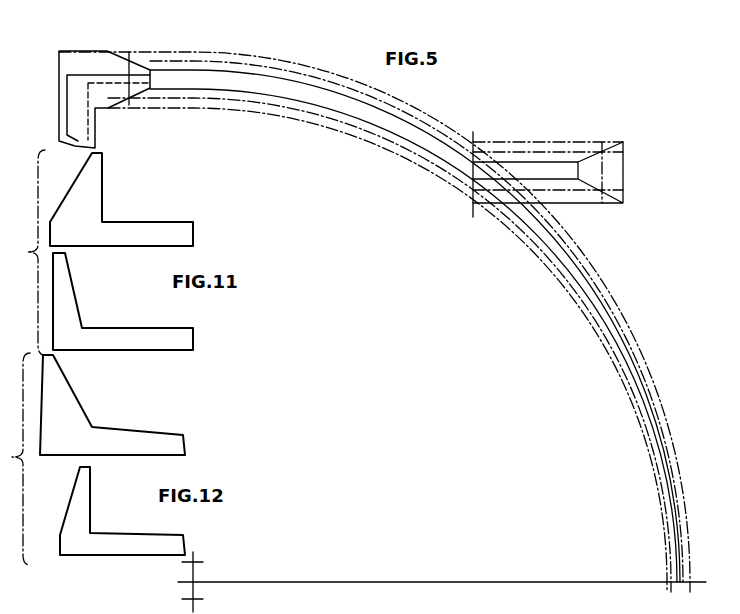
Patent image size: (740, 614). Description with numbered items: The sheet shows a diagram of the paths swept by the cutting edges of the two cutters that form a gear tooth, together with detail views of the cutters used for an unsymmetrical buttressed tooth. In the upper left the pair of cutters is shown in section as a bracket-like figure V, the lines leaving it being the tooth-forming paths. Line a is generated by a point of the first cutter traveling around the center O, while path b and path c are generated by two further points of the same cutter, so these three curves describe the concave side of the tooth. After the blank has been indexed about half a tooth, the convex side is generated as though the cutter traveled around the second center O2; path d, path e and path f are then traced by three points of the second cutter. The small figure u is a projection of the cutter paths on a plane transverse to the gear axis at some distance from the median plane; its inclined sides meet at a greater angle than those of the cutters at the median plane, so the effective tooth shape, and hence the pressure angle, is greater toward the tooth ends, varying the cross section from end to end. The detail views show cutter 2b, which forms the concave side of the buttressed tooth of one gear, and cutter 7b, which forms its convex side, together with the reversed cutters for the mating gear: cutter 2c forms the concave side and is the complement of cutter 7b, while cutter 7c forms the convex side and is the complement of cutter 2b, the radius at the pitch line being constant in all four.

In FIG. 5, the end bracket / wall section V is at (112, 66).
In FIG. 5, the line generated by the point of the first cutter a is at (228, 68).
In FIG. 5, the path generated by a second point of the first cutter b is at (263, 64).
In FIG. 5, the path generated by a third point of the first cutter c is at (297, 63).
In FIG. 5, the path of movement of a point of the second cutter d is at (268, 97).
In FIG. 5, the path of movement of a second point of the second cutter e is at (288, 98).
In FIG. 5, the path of movement of a third point of the second cutter f is at (323, 113).
In FIG. 5, the projection of the path of movement of the cutters u is at (614, 166).
In FIG. 5, the center o O is at (195, 562).
In FIG. 5, the center o2 O2 is at (196, 600).
In FIG. 11, the cutter 2b is at (90, 191).
In FIG. 11, the cutter 7b is at (60, 303).
In FIG. 12, the cutter 7c is at (60, 412).
In FIG. 12, the cutter 2c is at (73, 518).